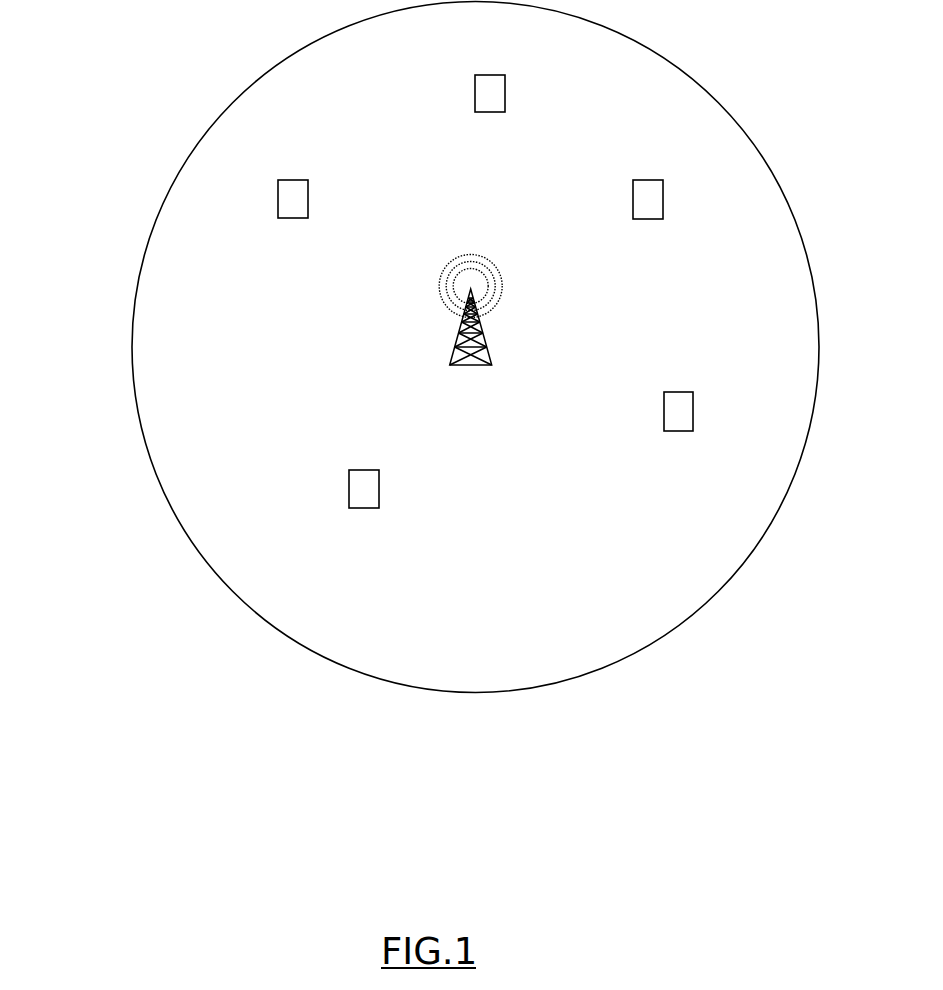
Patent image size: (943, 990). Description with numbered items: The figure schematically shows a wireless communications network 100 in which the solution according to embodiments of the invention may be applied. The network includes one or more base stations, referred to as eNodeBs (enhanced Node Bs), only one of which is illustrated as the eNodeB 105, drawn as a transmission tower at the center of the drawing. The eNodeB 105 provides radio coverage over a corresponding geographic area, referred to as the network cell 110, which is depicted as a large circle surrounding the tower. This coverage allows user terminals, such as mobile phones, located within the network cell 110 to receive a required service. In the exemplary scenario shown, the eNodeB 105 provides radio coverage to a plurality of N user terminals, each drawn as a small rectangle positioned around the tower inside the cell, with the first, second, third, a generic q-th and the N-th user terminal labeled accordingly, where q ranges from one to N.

The wireless communications network 100 is at (98, 773).
The eNodeB base station 105 is at (465, 368).
The network cell 110 is at (397, 684).